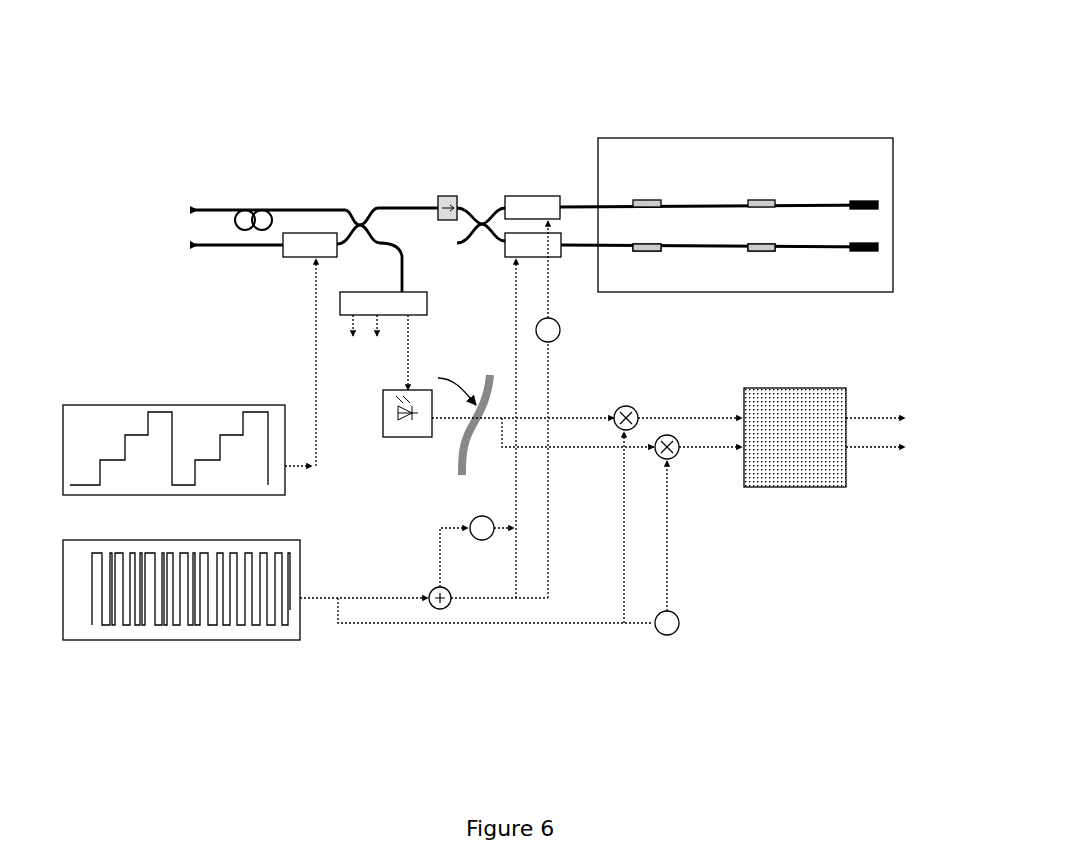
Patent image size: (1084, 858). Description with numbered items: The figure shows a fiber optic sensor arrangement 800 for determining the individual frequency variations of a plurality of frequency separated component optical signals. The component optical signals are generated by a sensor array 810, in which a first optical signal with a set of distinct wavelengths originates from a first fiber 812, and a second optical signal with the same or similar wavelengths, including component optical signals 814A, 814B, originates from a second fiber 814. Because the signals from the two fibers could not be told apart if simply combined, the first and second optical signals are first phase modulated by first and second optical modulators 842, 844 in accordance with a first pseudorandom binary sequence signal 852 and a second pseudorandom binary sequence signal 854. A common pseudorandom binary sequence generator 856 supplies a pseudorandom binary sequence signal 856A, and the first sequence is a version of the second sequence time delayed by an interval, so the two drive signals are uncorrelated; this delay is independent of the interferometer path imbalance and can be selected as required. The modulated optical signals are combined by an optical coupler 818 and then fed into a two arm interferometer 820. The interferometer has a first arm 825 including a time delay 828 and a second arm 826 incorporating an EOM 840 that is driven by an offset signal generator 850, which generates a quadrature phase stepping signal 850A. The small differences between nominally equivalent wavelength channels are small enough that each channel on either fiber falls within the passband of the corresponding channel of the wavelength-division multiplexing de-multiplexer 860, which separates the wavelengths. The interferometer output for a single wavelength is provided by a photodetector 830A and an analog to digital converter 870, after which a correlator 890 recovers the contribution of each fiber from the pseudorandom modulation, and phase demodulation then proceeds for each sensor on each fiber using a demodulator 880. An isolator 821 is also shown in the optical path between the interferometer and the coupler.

The fiber optic sensor arrangement 800 is at (134, 78).
The sensor array 810 is at (660, 137).
The first fiber 812 is at (586, 205).
The second fiber 814 is at (571, 250).
The component optical signal 814A is at (662, 251).
The component optical signal 814B is at (768, 251).
The optical coupler 818 is at (481, 216).
The two arm interferometer 820 is at (362, 200).
The optical isolator 821 is at (454, 195).
The first arm 825 is at (285, 208).
The second arm 826 is at (224, 247).
The time delay 828 is at (238, 208).
The photodetector 830A is at (382, 425).
The EOM 840 is at (284, 249).
The first optical modulator 842 is at (518, 195).
The second optical modulator 844 is at (502, 252).
The offset signal generator 850 is at (80, 404).
The quadrature phase stepping signal 850A is at (316, 335).
The first pseudorandom binary sequence signal 852 is at (550, 371).
The second pseudorandom binary sequence signal 854 is at (515, 313).
The pseudorandom binary sequence generator 856 is at (301, 638).
The pseudorandom binary sequence signal 856A is at (314, 596).
The wavelength-division multiplexing de-multiplexer 860 is at (430, 299).
The analog to digital converter 870 is at (421, 352).
The demodulator 880 is at (782, 385).
The correlator 890 is at (650, 400).